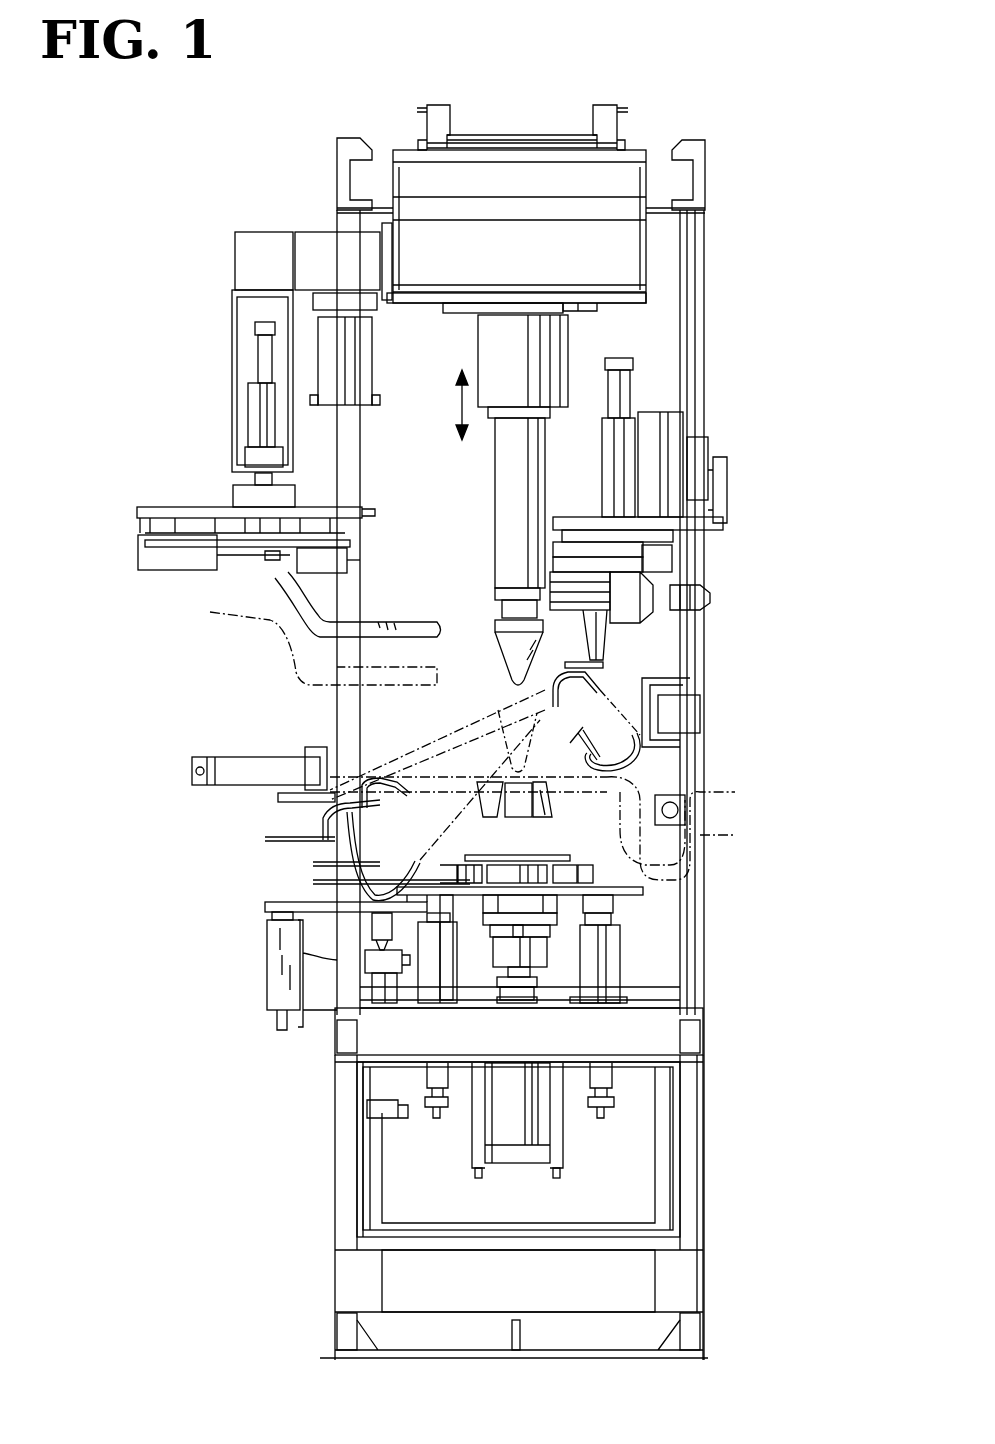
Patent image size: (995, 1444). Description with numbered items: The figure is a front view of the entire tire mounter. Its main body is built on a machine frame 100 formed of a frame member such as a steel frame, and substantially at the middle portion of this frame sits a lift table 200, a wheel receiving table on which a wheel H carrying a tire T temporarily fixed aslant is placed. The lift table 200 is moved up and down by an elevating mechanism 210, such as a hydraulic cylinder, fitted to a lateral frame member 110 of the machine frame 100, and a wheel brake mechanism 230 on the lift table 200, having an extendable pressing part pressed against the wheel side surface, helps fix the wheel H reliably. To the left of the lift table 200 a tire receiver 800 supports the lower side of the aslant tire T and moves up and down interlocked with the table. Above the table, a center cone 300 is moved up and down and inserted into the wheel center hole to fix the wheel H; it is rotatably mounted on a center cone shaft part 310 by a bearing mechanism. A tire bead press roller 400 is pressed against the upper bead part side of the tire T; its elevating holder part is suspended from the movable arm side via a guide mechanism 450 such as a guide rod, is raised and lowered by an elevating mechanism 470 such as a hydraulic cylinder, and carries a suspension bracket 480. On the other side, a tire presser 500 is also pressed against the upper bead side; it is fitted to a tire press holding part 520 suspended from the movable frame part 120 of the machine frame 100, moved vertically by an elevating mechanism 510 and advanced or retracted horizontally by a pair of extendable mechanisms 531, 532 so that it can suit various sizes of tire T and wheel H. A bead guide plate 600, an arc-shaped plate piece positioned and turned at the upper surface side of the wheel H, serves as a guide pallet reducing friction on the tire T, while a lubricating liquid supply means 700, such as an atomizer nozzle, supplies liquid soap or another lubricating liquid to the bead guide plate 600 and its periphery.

The machine frame 100 is at (723, 216).
The lateral frame member 110 is at (637, 1065).
The movable frame part 120 is at (640, 255).
The lift table 200 is at (630, 905).
The elevating mechanism 210 is at (528, 1118).
The wheel brake mechanism 230 is at (575, 847).
The center cone 300 is at (507, 643).
The center cone shaft part 310 is at (500, 487).
The tire bead press roller 400 is at (622, 605).
The guide mechanism 450 is at (622, 388).
The elevating mechanism 470 is at (675, 433).
The suspension bracket 480 is at (643, 545).
The tire presser 500 is at (313, 637).
The elevating mechanism 510 is at (252, 413).
The tire press holding part 520 is at (187, 507).
The extendable mechanism 531 is at (165, 572).
The extendable mechanism 532 is at (310, 563).
The bead guide plate 600 is at (610, 647).
The lubricating liquid supply means 700 is at (605, 747).
The tire receiver 800 is at (332, 842).
The tire T is at (680, 713).
The wheel H is at (607, 840).